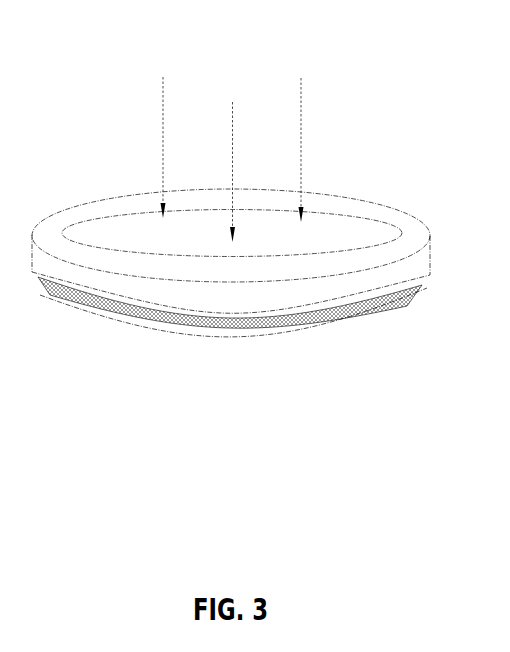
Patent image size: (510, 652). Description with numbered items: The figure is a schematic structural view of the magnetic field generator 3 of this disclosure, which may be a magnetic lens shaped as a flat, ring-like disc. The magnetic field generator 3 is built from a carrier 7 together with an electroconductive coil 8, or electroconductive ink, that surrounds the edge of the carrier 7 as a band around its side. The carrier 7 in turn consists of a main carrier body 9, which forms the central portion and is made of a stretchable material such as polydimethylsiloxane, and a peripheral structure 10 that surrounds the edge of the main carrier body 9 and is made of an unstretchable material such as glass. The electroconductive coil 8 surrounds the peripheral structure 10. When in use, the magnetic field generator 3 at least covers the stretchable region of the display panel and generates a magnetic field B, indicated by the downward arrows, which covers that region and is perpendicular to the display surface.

The magnetic field generator 3 is at (231, 363).
The carrier 7 is at (231, 331).
The electroconductive coil 8 is at (230, 360).
The main carrier body 9 is at (177, 235).
The peripheral structure 10 is at (260, 282).
The magnetic field B is at (232, 155).